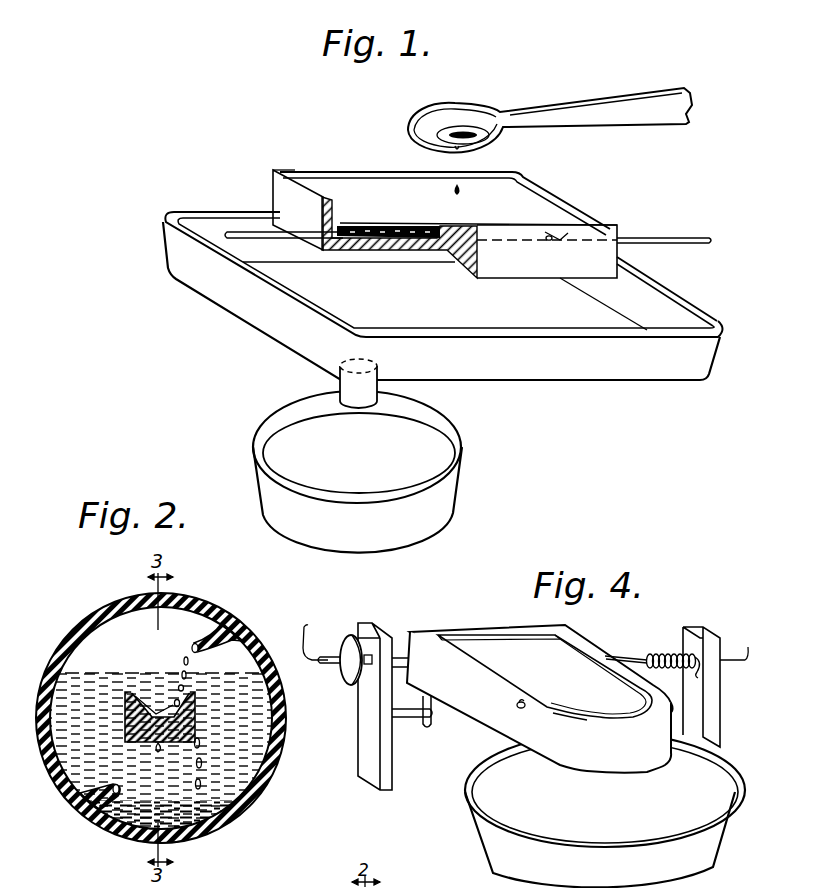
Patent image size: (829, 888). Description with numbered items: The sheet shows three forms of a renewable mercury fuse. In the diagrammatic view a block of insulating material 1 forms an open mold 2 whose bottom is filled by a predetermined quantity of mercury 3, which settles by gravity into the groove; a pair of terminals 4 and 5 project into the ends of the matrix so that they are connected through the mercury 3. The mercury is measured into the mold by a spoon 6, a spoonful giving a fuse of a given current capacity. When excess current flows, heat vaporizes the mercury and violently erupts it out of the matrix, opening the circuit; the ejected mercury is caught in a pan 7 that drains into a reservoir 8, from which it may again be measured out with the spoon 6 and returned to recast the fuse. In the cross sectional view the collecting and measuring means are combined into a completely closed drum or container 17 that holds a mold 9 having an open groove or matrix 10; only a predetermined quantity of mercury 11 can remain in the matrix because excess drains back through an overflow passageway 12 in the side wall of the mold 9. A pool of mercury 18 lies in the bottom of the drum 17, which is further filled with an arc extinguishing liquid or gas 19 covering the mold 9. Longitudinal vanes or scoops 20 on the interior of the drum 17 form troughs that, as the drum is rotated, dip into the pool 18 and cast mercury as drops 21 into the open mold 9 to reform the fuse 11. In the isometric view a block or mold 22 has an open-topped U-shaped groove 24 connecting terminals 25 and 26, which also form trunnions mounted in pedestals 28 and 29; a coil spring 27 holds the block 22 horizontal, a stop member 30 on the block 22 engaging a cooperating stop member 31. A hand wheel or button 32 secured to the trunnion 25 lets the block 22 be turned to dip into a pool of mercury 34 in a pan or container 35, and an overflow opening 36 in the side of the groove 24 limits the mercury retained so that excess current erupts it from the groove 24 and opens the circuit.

In FIG. 1, the block of insulating material 1 is at (290, 171).
In FIG. 1, the mold 2 is at (342, 192).
In FIG. 1, the mercury 3 is at (370, 227).
In FIG. 1, the terminal 4 is at (267, 235).
In FIG. 1, the terminal 5 is at (670, 237).
In FIG. 1, the spoon 6 is at (538, 111).
In FIG. 1, the pan 7 is at (173, 247).
In FIG. 1, the reservoir 8 is at (257, 428).
In FIG. 2, the mold 9 is at (126, 735).
In FIG. 2, the groove or matrix 10 is at (126, 712).
In FIG. 2, the mercury 11 is at (150, 712).
In FIG. 2, the passageway 12 is at (195, 716).
In FIG. 4, the passageway 12 is at (308, 671).
In FIG. 2, the drum or container 17 is at (92, 624).
In FIG. 2, the mercury 18 is at (222, 822).
In FIG. 2, the arc extinguishing liquid or gas 19 is at (220, 683).
In FIG. 2, the vanes or scoops 20 is at (214, 638).
In FIG. 2, the drops 21 is at (182, 657).
In FIG. 4, the block or mold 22 is at (482, 630).
In FIG. 4, the U-shaped groove 24 is at (577, 650).
In FIG. 4, the terminal 25 is at (400, 657).
In FIG. 4, the terminal 26 is at (622, 658).
In FIG. 4, the coil spring 27 is at (649, 655).
In FIG. 4, the pedestal 28 is at (367, 763).
In FIG. 4, the pedestal 29 is at (713, 710).
In FIG. 4, the stop member 30 is at (437, 707).
In FIG. 4, the stop member 31 is at (407, 713).
In FIG. 4, the hand wheel or button 32 is at (347, 637).
In FIG. 4, the pool of mercury 34 is at (647, 807).
In FIG. 4, the pan or container 35 is at (460, 773).
In FIG. 4, the overflow opening 36 is at (517, 706).